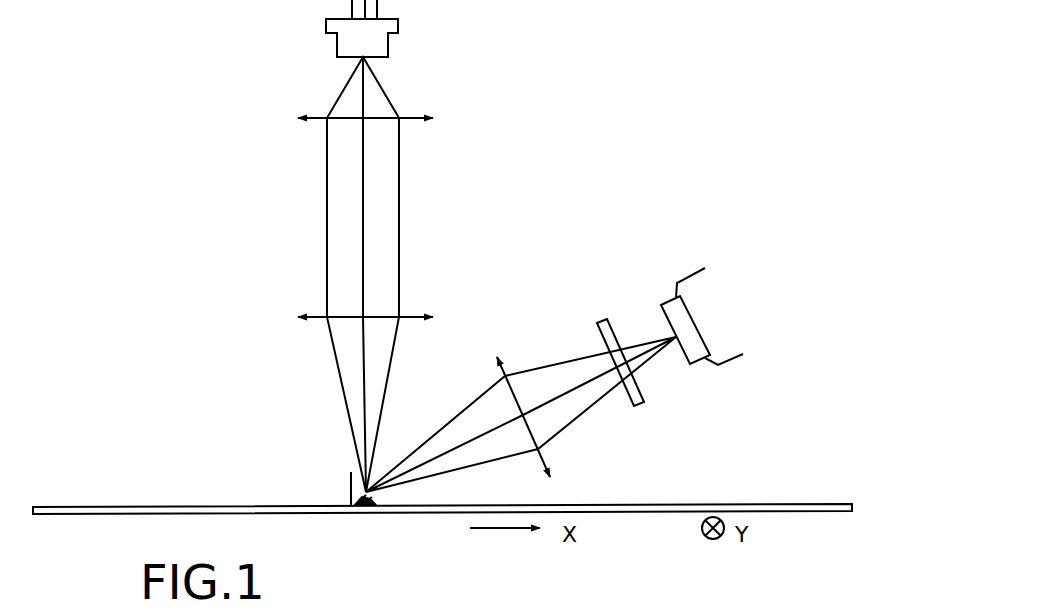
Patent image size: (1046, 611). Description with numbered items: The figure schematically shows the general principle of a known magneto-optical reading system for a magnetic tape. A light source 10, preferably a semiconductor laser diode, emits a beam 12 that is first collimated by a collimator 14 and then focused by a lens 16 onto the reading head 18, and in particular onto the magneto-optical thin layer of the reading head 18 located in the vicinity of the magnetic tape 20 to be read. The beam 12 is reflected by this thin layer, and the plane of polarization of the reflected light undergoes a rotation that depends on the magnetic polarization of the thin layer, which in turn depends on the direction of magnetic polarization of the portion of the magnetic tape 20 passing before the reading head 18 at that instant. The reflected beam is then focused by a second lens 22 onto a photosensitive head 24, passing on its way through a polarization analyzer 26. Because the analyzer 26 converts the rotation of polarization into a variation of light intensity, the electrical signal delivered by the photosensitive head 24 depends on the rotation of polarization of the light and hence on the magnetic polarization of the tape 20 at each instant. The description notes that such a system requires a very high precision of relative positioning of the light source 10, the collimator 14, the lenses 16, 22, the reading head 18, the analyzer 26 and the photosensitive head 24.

The light source 10 is at (388, 45).
The beam 12 is at (383, 90).
The collimator 14 is at (423, 122).
The lens 16 is at (423, 317).
The reading head 18 is at (351, 492).
The magnetic tape 20 is at (230, 507).
The lens 22 is at (547, 463).
The photosensitive head 24 is at (683, 363).
The polarization analyzer 26 is at (643, 398).